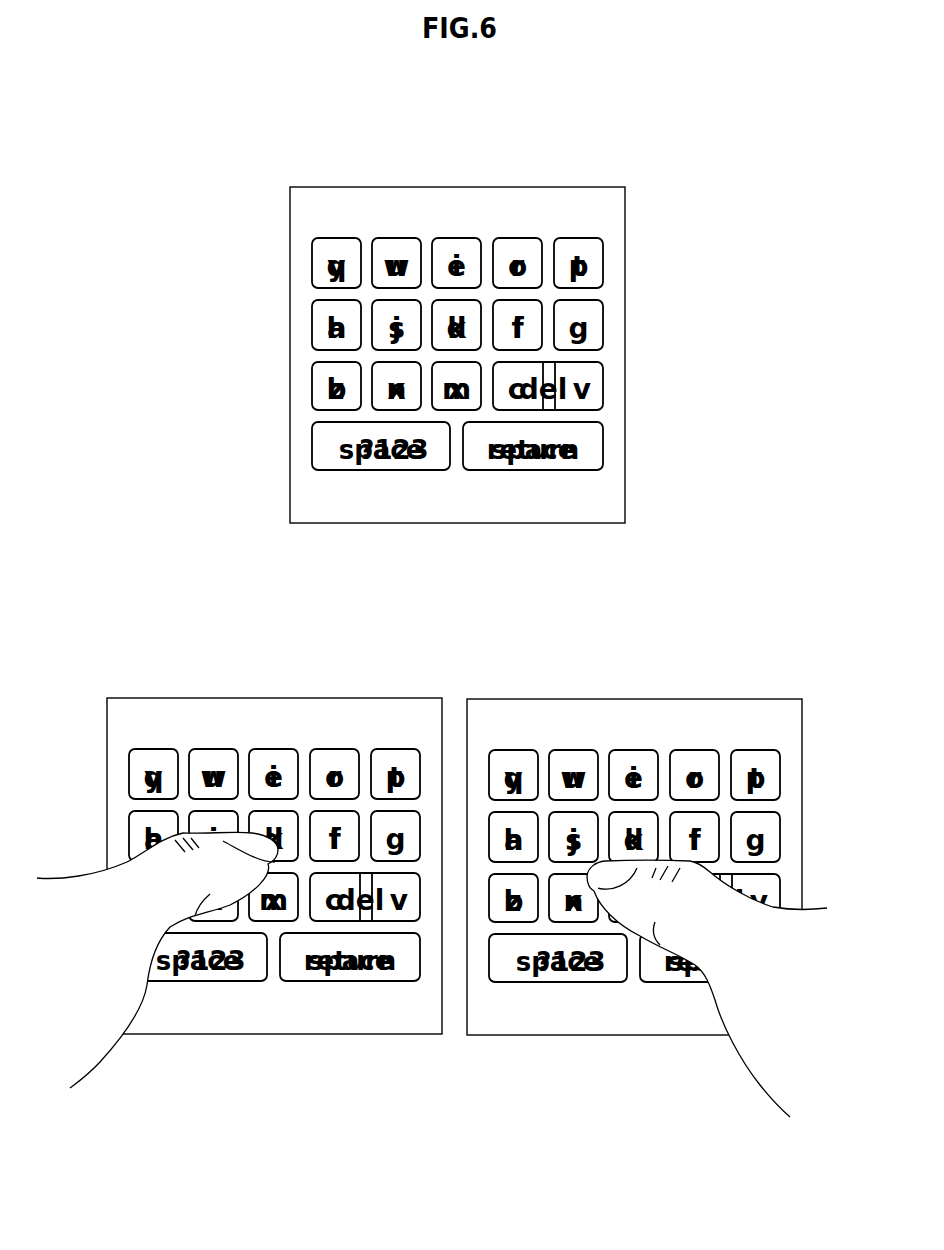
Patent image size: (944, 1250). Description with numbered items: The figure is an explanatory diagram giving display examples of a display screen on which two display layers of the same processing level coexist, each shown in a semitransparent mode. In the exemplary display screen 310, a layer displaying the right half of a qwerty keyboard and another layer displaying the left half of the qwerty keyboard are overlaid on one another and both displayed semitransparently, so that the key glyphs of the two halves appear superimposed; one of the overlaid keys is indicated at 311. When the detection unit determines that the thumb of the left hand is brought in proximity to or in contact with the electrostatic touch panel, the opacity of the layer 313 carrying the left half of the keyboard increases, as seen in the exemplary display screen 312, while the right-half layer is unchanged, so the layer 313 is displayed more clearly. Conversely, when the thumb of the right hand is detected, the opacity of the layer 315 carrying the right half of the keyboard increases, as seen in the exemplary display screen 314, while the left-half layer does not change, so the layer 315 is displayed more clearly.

The exemplary display screen 310 is at (538, 187).
The key 311 is at (605, 253).
The exemplary display screen 312 is at (355, 698).
The layer 313 is at (129, 750).
The exemplary display screen 314 is at (713, 699).
The layer 315 is at (780, 752).